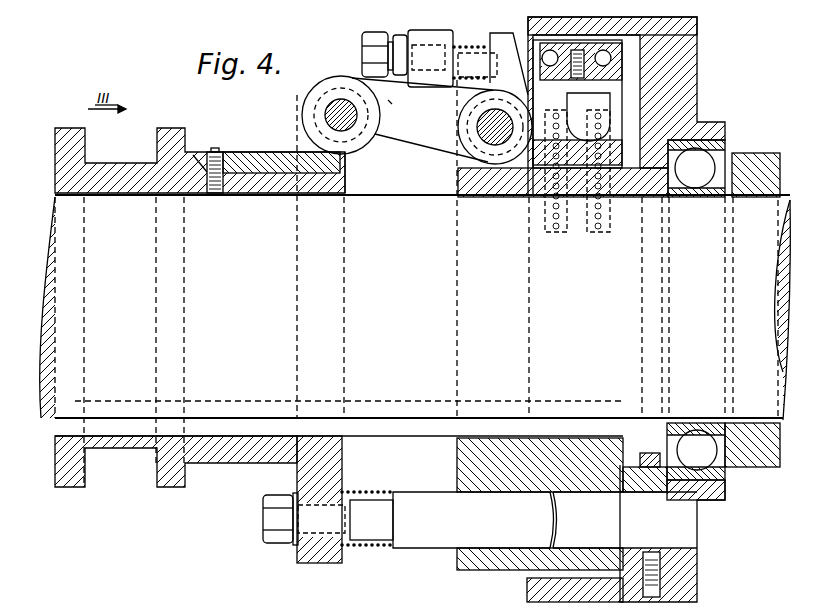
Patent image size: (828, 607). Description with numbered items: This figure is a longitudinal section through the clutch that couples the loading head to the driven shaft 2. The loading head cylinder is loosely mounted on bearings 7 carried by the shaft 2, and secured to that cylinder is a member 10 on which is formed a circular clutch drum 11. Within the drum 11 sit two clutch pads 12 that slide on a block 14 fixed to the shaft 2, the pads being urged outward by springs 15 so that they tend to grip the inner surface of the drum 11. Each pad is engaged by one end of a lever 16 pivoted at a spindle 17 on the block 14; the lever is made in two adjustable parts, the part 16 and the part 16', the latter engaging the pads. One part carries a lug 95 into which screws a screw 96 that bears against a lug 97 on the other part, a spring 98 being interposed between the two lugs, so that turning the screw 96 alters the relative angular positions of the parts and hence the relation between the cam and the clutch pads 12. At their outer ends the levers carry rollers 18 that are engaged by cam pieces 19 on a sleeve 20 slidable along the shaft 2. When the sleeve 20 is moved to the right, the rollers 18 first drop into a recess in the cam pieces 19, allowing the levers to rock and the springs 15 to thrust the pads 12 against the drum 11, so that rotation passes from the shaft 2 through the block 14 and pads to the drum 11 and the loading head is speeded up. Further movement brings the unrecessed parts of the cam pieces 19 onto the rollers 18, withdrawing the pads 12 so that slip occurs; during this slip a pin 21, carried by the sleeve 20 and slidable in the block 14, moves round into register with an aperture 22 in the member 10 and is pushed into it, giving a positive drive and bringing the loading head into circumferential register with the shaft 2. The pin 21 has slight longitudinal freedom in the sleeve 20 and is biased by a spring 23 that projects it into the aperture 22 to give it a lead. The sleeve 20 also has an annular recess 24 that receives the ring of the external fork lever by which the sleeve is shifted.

The shaft 2 is at (415, 281).
The bearings 7 is at (698, 178).
The member 10 is at (685, 90).
The clutch drum 11 is at (533, 25).
The clutch pads 12 is at (635, 150).
The block 14 is at (470, 457).
The springs 15 is at (597, 220).
The lever 16 is at (422, 132).
The lever part 16' is at (613, 87).
The spindle 17 is at (493, 123).
The rollers 18 is at (305, 117).
The cam pieces 19 is at (268, 197).
The sleeve 20 is at (138, 200).
The pin 21 is at (453, 520).
The aperture 22 is at (680, 533).
The spring 23 is at (383, 486).
The annular recess 24 is at (123, 450).
The lug 95 is at (430, 58).
The screw 96 is at (372, 50).
The lug 97 is at (490, 45).
The spring 98 is at (402, 111).